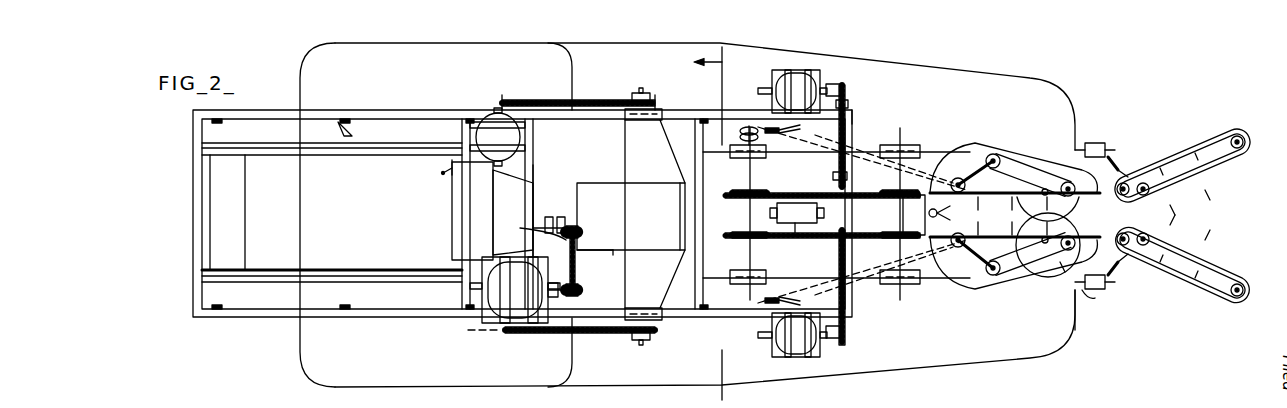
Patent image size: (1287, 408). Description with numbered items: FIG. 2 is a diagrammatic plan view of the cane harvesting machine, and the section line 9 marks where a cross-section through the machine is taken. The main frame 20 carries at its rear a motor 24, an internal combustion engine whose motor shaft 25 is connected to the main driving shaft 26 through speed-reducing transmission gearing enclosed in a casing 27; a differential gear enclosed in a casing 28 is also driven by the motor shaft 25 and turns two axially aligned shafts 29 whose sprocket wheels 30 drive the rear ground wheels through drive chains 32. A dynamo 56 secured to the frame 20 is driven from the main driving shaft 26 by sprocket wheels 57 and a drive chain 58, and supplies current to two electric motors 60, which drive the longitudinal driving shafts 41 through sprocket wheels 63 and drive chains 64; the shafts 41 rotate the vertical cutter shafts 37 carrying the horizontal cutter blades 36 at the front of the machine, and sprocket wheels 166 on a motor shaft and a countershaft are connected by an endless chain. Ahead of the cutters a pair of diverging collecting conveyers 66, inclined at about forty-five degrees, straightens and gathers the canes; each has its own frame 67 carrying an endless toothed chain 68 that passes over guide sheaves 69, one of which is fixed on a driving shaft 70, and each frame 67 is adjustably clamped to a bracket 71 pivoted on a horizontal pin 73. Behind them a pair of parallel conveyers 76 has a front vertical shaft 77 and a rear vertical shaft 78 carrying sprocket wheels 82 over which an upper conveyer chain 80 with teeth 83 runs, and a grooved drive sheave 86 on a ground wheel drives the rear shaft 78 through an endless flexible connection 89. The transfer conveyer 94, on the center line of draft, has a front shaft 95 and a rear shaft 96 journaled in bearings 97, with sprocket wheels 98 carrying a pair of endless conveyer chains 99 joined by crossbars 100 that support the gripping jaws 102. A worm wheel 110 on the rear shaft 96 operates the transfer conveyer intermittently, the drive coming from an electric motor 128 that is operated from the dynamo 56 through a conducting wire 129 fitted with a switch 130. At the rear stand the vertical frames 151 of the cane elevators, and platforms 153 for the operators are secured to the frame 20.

The section line 9 is at (716, 223).
The main frame 20 is at (392, 113).
The motor 24 is at (264, 212).
The motor shaft 25 is at (568, 222).
The main driving shaft 26 is at (529, 211).
The casing 27 is at (598, 192).
The casing 28 is at (654, 193).
The shafts 29 is at (641, 92).
The sprocket wheels 30 is at (650, 97).
The drive chains 32 is at (582, 100).
The horizontal cutter blades 36 is at (1105, 143).
The vertical cutter shafts 37 is at (1042, 190).
The longitudinal driving shafts 41 is at (836, 215).
The dynamo 56 is at (518, 300).
The sprocket wheels 57 is at (580, 232).
The drive chain 58 is at (578, 262).
The electric motors 60 is at (795, 88).
The sprocket wheels 63 is at (846, 92).
The drive chains 64 is at (848, 106).
The collecting conveyers 66 is at (1180, 170).
The conveyer frame 67 is at (1130, 176).
The endless chain 68 is at (1198, 172).
The guide sheaves 69 is at (1238, 150).
The driving shaft 70 is at (1059, 237).
The bracket 71 is at (1105, 147).
The horizontal pin 73 is at (1092, 296).
The conveyers 76 is at (992, 148).
The front vertical shaft 77 is at (1062, 275).
The rear vertical shaft 78 is at (966, 243).
The upper conveyer chain 80 is at (1032, 165).
The sprocket wheels 82 is at (972, 181).
The teeth 83 is at (957, 178).
The grooved drive sheave 86 is at (766, 128).
The endless flexible connection 89 is at (875, 142).
The transfer conveyer 94 is at (822, 215).
The front shaft 95 is at (903, 286).
The rear shaft 96 is at (755, 252).
The bearings 97 is at (745, 270).
The sprocket wheels 98 is at (745, 189).
The endless conveyer chains 99 is at (806, 240).
The crossbars 100 is at (912, 215).
The jaws 102 is at (818, 213).
The worm wheel 110 is at (760, 141).
The motor 128 is at (497, 137).
The conducting wire 129 is at (450, 230).
The switch 130 is at (440, 184).
The vertical frame 151 is at (346, 120).
The platforms 153 is at (960, 80).
The sprocket wheels 166 is at (833, 84).